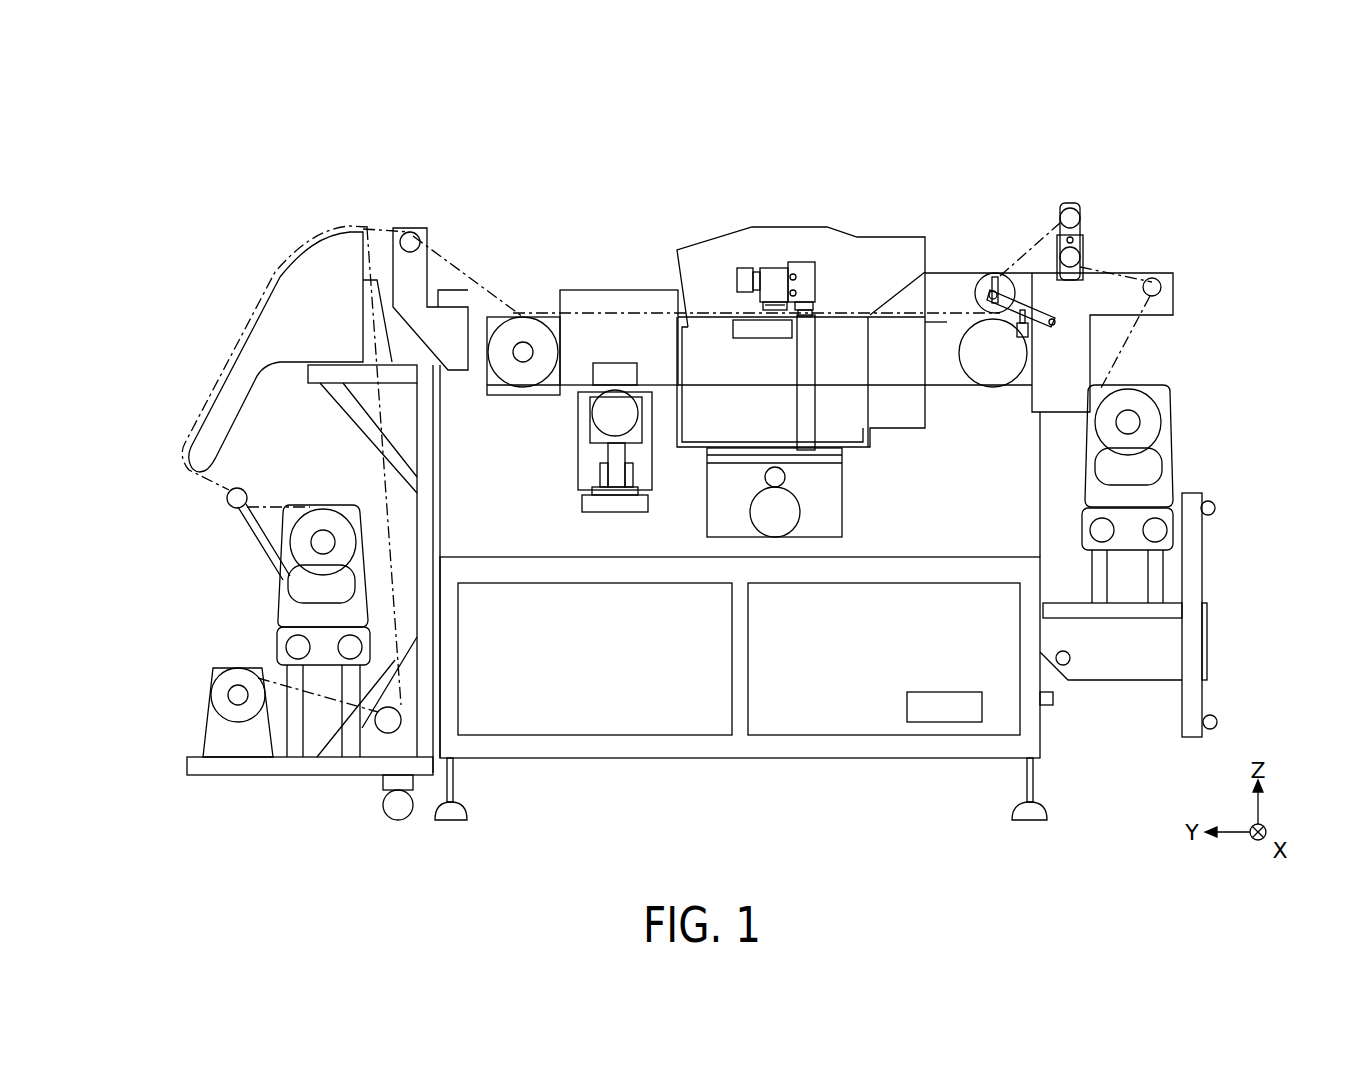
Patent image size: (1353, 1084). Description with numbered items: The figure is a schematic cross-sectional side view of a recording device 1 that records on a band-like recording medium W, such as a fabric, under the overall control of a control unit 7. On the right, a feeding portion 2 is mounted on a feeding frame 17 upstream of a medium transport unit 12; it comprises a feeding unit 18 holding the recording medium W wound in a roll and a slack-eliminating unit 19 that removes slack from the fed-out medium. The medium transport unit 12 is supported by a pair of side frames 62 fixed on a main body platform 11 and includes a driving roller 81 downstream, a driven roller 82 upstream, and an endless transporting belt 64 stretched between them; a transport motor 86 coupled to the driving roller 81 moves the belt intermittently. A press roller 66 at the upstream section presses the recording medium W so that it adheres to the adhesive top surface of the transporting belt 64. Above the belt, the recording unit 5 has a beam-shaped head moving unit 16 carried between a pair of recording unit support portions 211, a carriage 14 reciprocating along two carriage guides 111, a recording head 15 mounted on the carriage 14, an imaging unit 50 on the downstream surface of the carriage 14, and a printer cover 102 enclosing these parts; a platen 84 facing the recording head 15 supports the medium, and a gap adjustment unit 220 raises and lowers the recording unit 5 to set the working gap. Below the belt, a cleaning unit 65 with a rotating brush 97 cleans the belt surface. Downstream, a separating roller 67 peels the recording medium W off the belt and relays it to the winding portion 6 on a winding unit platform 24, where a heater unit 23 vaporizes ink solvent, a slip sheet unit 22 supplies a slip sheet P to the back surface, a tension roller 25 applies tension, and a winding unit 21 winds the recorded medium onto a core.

The recording device 1 is at (1072, 108).
The feeding portion 2 is at (1152, 163).
The recording unit 5 is at (858, 160).
The winding portion 6 is at (286, 203).
The control unit 7 is at (943, 692).
The main body platform 11 is at (547, 758).
The medium transport unit 12 is at (586, 258).
The carriage 14 is at (776, 266).
The recording head 15 is at (765, 305).
The head moving unit 16 is at (826, 266).
The feeding frame 17 is at (1180, 703).
The feeding unit 18 is at (1188, 426).
The slack-eliminating unit 19 is at (1110, 241).
The winding unit 21 is at (260, 579).
The slip sheet unit 22 is at (194, 663).
The heater unit 23 is at (212, 333).
The winding unit platform 24 is at (325, 760).
The tension roller 25 is at (241, 490).
The imaging unit 50 is at (737, 276).
The side frames 62 is at (680, 538).
The transporting belt 64 is at (633, 290).
The cleaning unit 65 is at (570, 399).
The press roller 66 is at (990, 283).
The separating roller 67 is at (410, 232).
The driving roller 81 is at (495, 300).
The driven roller 82 is at (970, 345).
The platen 84 is at (750, 339).
The transport motor 86 is at (521, 337).
The rotating brush 97 is at (605, 425).
The printer cover 102 is at (870, 236).
The carriage guides 111 is at (806, 262).
The recording unit support portions 211 is at (815, 400).
The gap adjustment unit 220 is at (826, 308).
The recording medium W is at (458, 258).
The slip sheet P is at (383, 493).